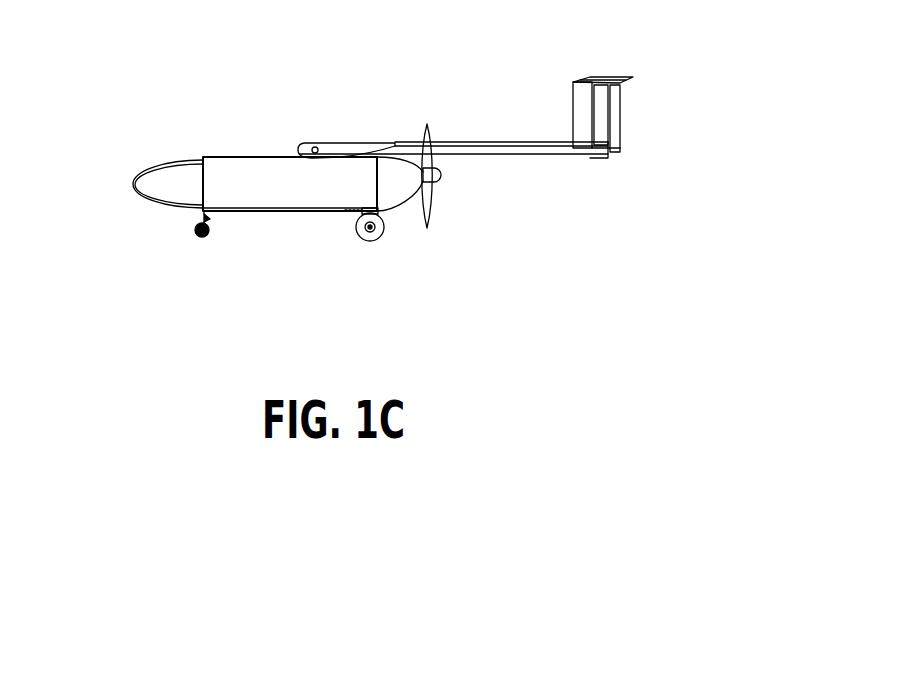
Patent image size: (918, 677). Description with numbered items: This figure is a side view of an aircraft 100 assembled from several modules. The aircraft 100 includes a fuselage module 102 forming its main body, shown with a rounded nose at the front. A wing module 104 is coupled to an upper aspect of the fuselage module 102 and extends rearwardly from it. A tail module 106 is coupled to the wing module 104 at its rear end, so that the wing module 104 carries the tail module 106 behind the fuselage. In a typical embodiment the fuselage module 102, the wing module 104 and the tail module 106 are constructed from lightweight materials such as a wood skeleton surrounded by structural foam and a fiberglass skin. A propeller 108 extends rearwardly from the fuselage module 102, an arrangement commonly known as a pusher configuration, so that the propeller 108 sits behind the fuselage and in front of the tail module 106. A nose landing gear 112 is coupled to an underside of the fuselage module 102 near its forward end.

The aircraft 100 is at (128, 62).
The fuselage module 102 is at (247, 209).
The wing module 104 is at (328, 147).
The tail module 106 is at (573, 117).
The propeller 108 is at (437, 216).
The nose landing gear 112 is at (194, 230).